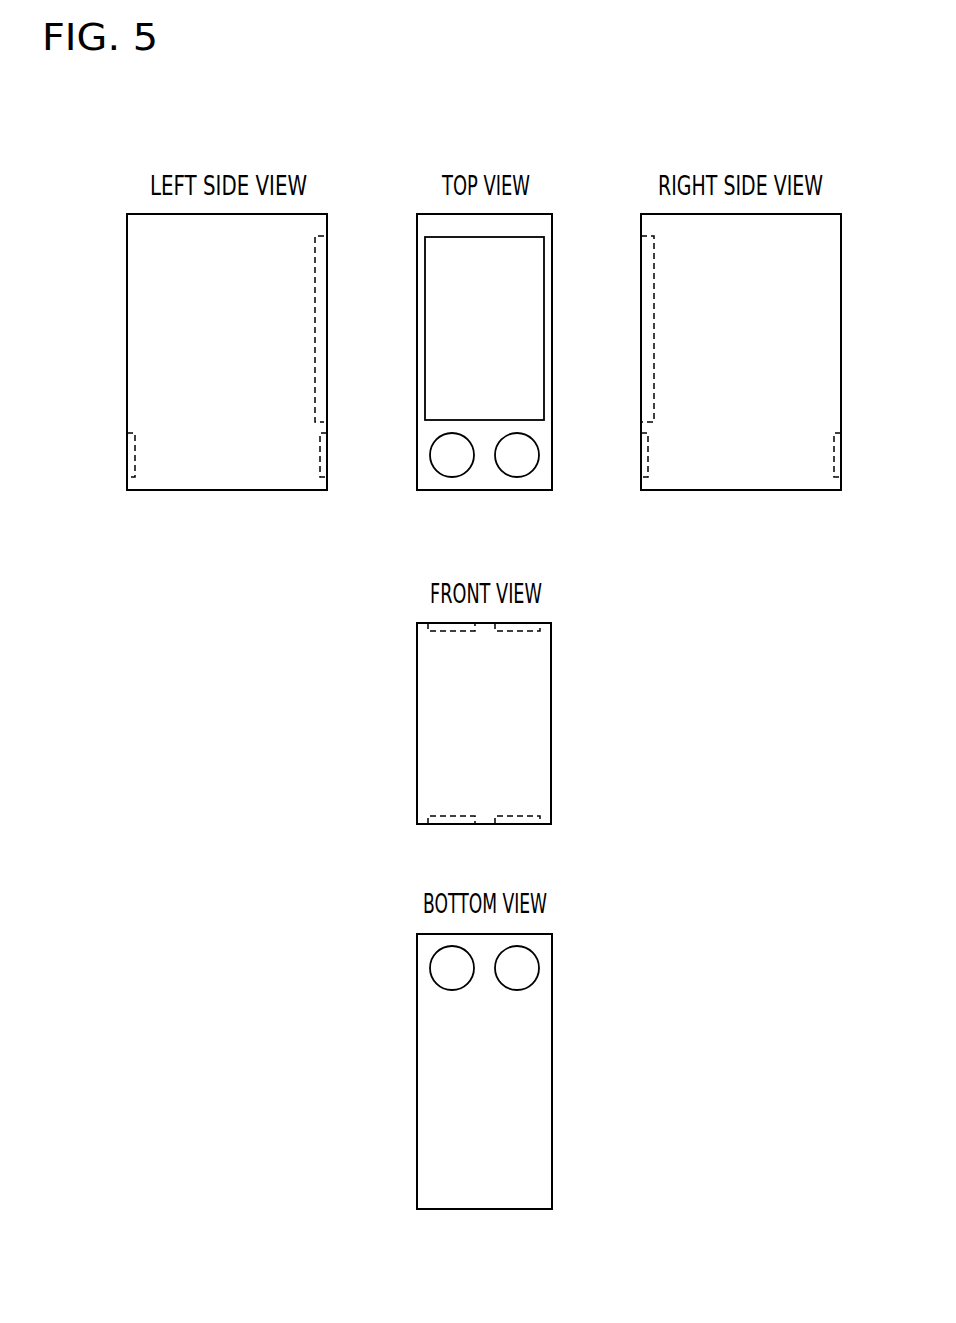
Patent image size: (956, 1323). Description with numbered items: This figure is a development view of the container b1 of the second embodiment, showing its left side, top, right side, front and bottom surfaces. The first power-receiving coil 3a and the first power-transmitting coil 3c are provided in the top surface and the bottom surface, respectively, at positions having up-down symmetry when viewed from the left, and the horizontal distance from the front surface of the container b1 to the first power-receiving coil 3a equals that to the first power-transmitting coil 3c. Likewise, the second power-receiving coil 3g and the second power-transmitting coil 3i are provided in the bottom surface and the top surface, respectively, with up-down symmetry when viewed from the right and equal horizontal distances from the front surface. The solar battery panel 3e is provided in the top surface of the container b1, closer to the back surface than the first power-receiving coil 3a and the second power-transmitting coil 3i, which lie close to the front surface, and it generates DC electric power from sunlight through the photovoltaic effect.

The container b1 is at (242, 725).
The first power-receiving coil 3a is at (320, 455).
The first power-transmitting coil 3c is at (135, 455).
The solar battery panel 3e is at (313, 331).
The second power-receiving coil 3g is at (834, 455).
The second power-transmitting coil 3i is at (539, 455).